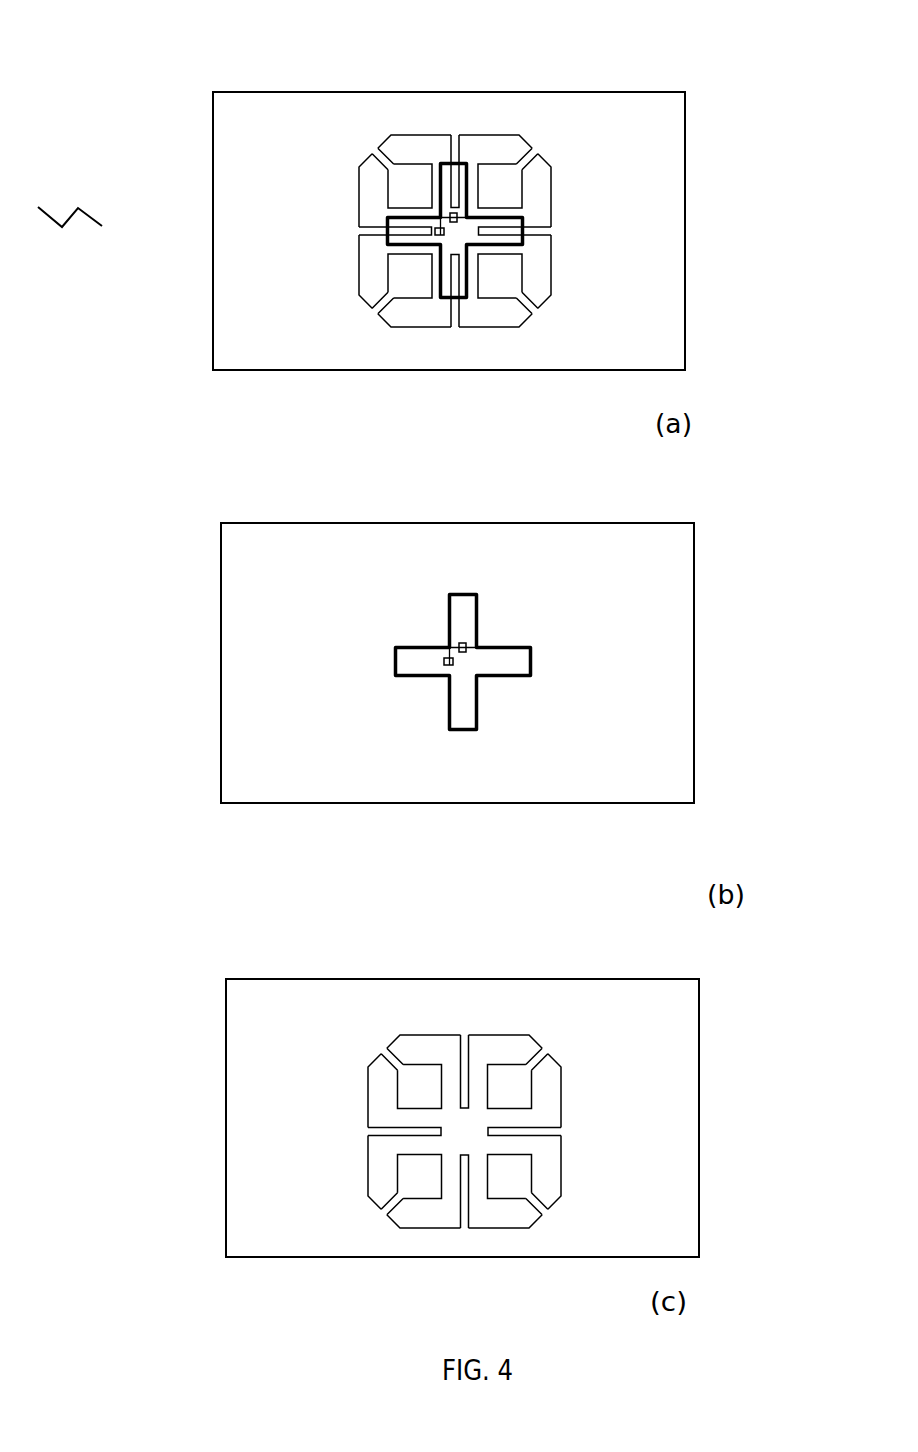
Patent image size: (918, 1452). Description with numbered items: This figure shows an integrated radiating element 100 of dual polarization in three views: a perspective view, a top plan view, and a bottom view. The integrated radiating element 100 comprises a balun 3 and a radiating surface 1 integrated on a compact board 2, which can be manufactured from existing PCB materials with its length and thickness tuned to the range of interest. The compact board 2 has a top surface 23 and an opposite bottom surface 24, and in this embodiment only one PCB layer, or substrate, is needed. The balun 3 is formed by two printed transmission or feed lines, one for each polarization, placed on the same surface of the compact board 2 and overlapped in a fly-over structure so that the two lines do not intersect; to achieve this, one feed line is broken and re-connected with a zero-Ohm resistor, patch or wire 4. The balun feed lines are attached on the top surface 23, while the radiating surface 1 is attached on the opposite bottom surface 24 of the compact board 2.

The integrated radiating element 100 is at (70, 194).
The radiating surface 1 is at (532, 275).
The compact board 2 is at (559, 89).
The balun 3 is at (480, 613).
The 0-Ohm resistor, patch or wire 4 is at (452, 658).
The top surface 23 is at (623, 589).
The bottom surface 24 is at (659, 1028).